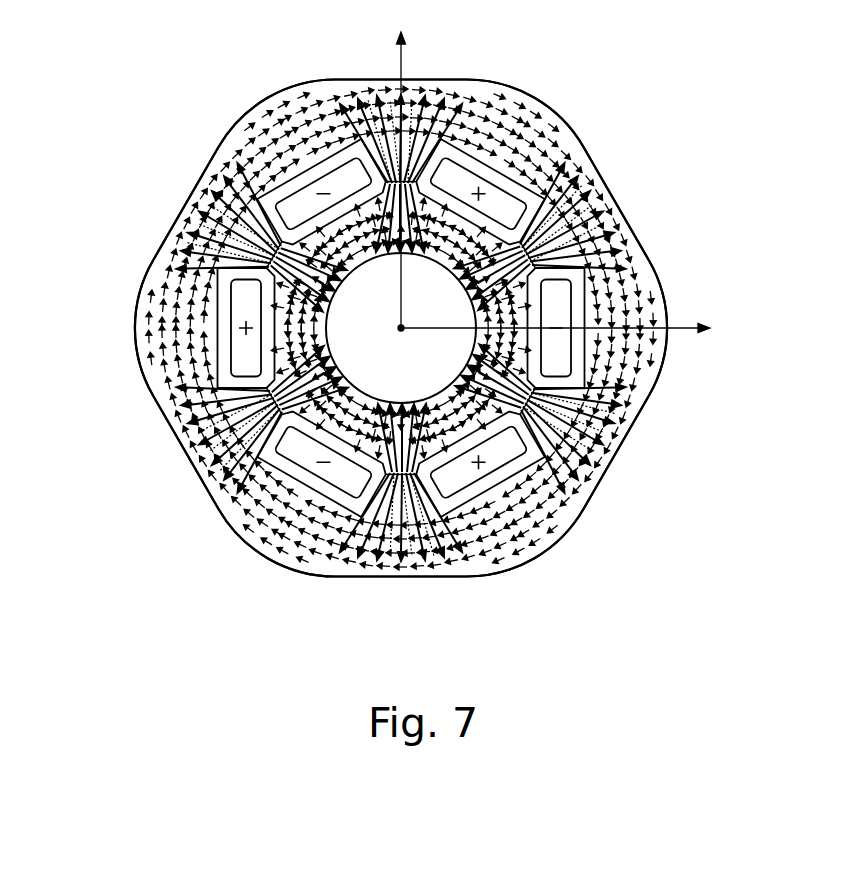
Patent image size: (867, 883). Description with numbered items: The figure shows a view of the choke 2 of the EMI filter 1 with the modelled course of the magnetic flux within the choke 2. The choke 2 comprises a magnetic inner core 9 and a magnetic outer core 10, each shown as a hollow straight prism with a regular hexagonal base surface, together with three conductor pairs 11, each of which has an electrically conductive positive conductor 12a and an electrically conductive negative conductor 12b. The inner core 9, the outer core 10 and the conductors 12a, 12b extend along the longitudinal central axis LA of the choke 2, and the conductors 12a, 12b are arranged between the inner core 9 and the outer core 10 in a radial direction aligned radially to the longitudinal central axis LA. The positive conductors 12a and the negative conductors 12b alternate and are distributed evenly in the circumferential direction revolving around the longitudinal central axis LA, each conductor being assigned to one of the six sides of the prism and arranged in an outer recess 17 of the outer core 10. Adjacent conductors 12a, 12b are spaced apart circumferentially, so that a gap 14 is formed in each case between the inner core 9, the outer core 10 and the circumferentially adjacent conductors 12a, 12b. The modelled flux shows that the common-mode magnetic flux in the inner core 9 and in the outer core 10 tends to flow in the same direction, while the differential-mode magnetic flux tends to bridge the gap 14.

The EMI filter 1 is at (413, 329).
The choke 2 is at (648, 129).
The inner core 9 is at (443, 532).
The outer core 10 is at (463, 557).
The conductor pair 11 is at (413, 324).
The positive conductor 12a is at (472, 178).
The negative conductor 12b is at (298, 203).
The gap 14 is at (388, 176).
The outer recess 17 is at (323, 175).
The longitudinal central axis LA is at (404, 325).